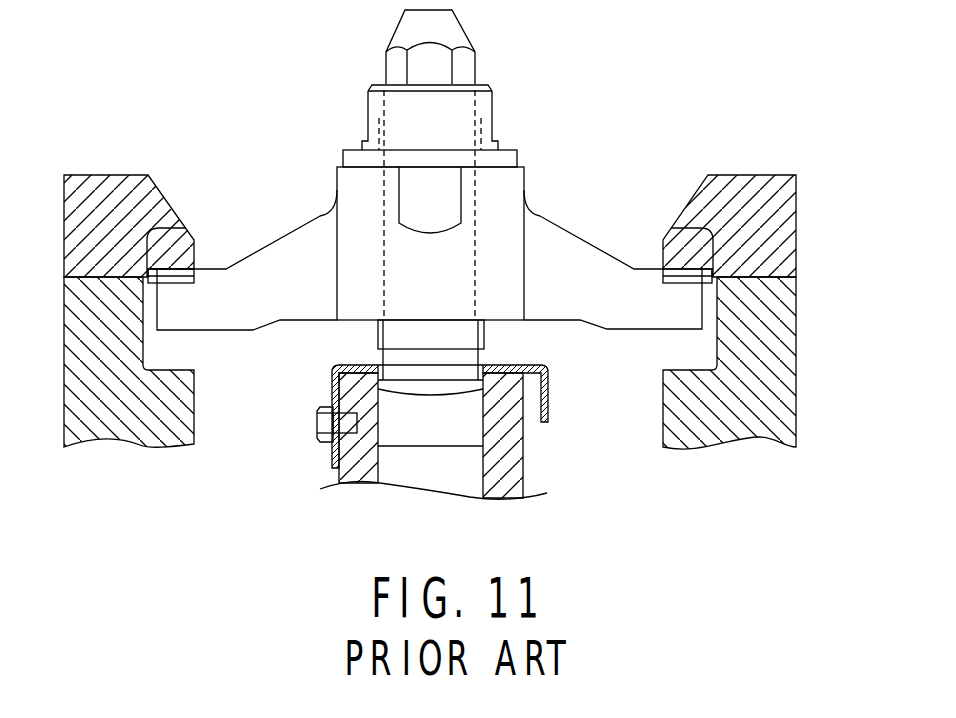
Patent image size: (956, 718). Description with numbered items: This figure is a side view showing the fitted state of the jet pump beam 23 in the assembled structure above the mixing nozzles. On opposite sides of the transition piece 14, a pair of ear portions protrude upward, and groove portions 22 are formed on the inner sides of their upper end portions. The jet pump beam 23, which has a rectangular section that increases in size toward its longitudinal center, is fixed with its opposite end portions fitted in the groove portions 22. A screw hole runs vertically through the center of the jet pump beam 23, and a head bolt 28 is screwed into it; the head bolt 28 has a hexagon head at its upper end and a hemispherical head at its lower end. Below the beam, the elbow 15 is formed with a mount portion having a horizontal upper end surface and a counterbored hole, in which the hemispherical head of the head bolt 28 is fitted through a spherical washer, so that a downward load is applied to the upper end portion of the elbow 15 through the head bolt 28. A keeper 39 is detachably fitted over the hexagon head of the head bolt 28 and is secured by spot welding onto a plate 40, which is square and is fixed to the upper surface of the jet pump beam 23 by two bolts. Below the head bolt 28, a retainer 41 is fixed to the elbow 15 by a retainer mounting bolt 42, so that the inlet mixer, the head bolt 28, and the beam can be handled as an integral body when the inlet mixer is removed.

The transition piece 14 is at (787, 400).
The elbow 15 is at (513, 480).
The groove portions 22 is at (152, 236).
The jet pump beam 23 is at (268, 265).
The head bolt 28 is at (477, 65).
The keeper 39 is at (492, 108).
The plate 40 is at (518, 160).
The retainer 41 is at (331, 390).
The retainer mounting bolt 42 is at (317, 422).